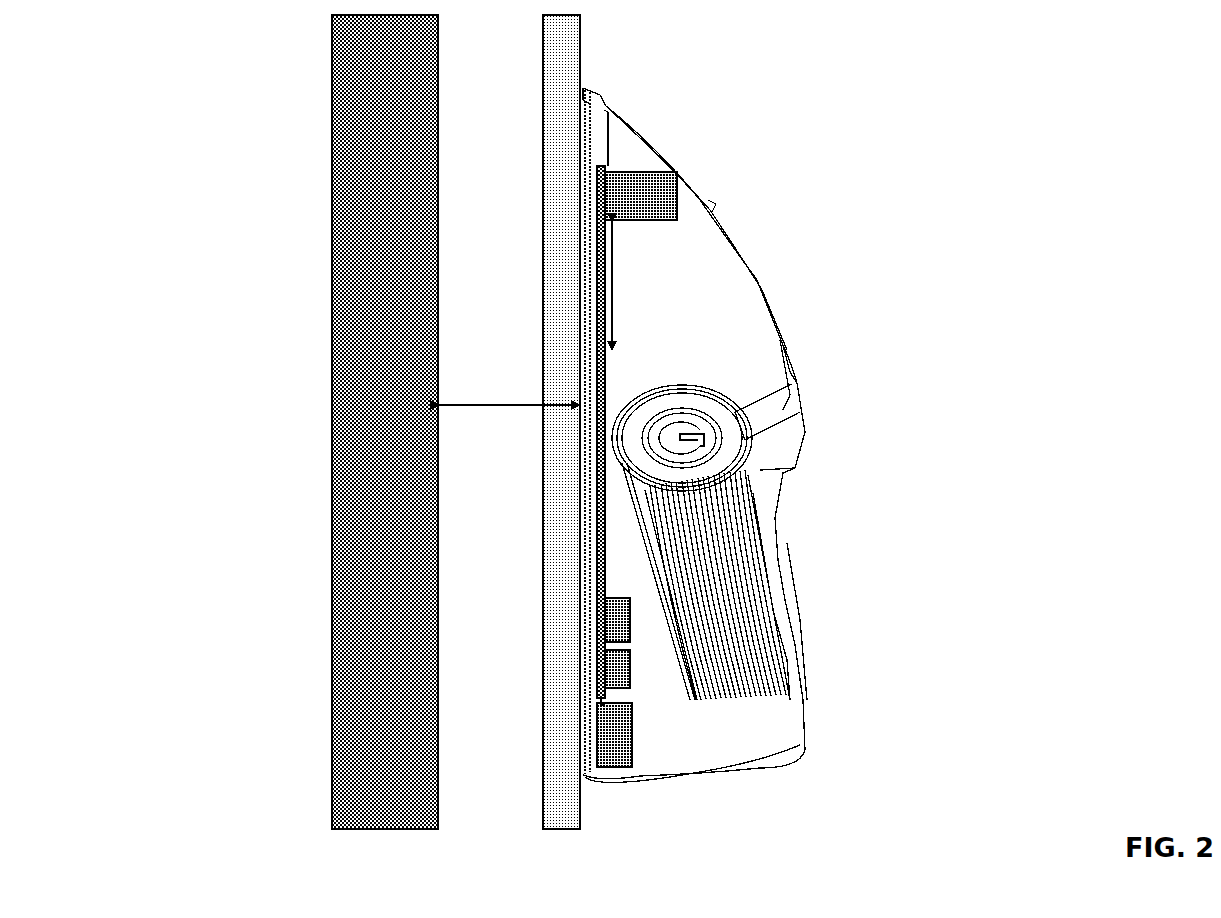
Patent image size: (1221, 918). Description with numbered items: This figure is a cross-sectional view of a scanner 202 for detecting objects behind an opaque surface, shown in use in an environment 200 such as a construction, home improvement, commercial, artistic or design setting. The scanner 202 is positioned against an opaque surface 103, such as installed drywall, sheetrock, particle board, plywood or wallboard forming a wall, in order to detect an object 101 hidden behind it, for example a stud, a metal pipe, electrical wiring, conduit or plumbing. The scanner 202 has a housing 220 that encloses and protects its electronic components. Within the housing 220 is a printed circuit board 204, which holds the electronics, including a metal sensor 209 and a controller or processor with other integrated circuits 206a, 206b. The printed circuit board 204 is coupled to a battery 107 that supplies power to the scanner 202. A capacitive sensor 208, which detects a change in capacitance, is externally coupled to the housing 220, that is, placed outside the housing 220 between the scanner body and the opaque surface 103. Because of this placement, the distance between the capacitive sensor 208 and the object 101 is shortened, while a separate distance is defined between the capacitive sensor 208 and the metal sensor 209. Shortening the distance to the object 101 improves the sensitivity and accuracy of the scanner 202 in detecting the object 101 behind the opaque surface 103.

The environment 200 is at (257, 622).
The object 101 is at (385, 830).
The opaque surface 103 is at (562, 829).
The capacitive sensor 208 is at (581, 359).
The printed circuit board 204 is at (598, 423).
The metal sensor 209 is at (677, 210).
The integrated circuit 206a is at (615, 606).
The integrated circuit 206b is at (615, 670).
The battery 107 is at (633, 745).
The scanner 202 is at (765, 435).
The housing 220 is at (711, 298).